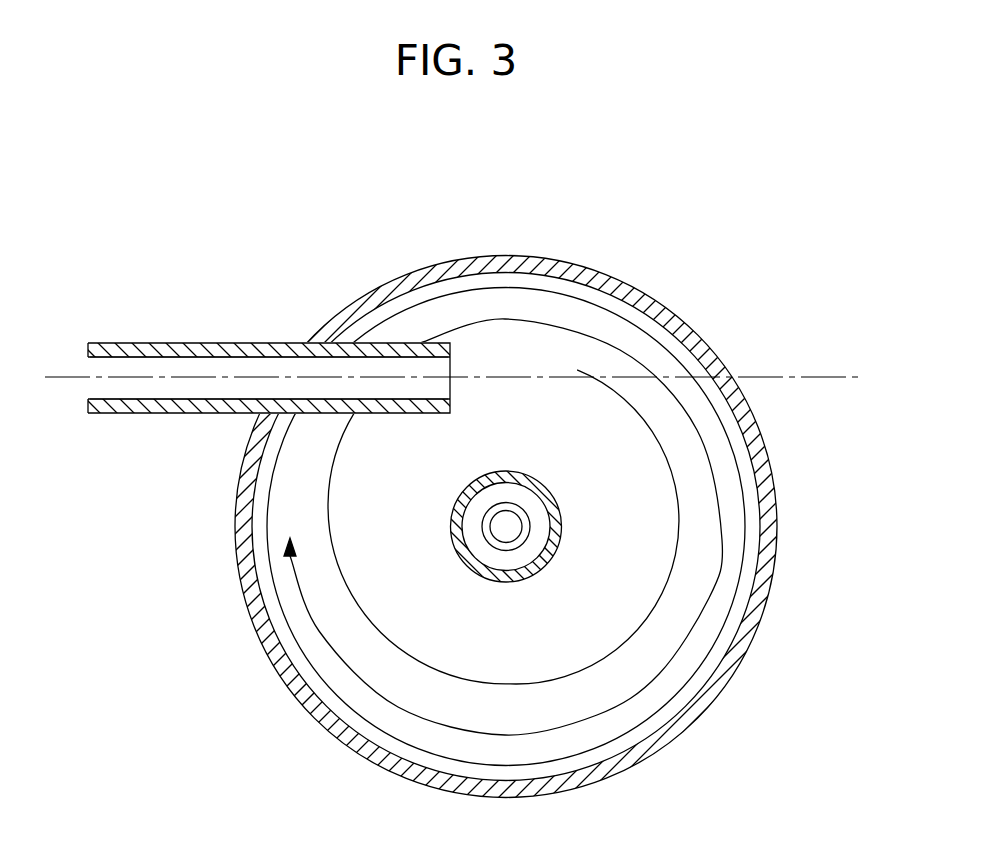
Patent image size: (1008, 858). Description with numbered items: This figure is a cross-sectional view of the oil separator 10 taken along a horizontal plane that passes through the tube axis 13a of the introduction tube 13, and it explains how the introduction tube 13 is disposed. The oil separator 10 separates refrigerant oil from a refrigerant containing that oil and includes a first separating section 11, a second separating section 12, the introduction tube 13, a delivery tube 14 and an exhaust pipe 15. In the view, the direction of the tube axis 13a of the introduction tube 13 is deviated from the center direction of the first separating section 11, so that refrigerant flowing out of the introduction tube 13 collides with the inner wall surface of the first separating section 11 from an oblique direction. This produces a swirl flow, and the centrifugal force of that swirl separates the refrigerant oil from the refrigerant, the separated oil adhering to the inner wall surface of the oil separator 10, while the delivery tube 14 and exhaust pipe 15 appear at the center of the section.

The oil separator 10 is at (654, 234).
The first separating section 11 is at (770, 519).
The second separating section 12 is at (745, 578).
The introduction tube 13 is at (203, 343).
The tube axis 13a is at (272, 378).
The delivery tube 14 is at (512, 475).
The exhaust pipe 15 is at (488, 518).